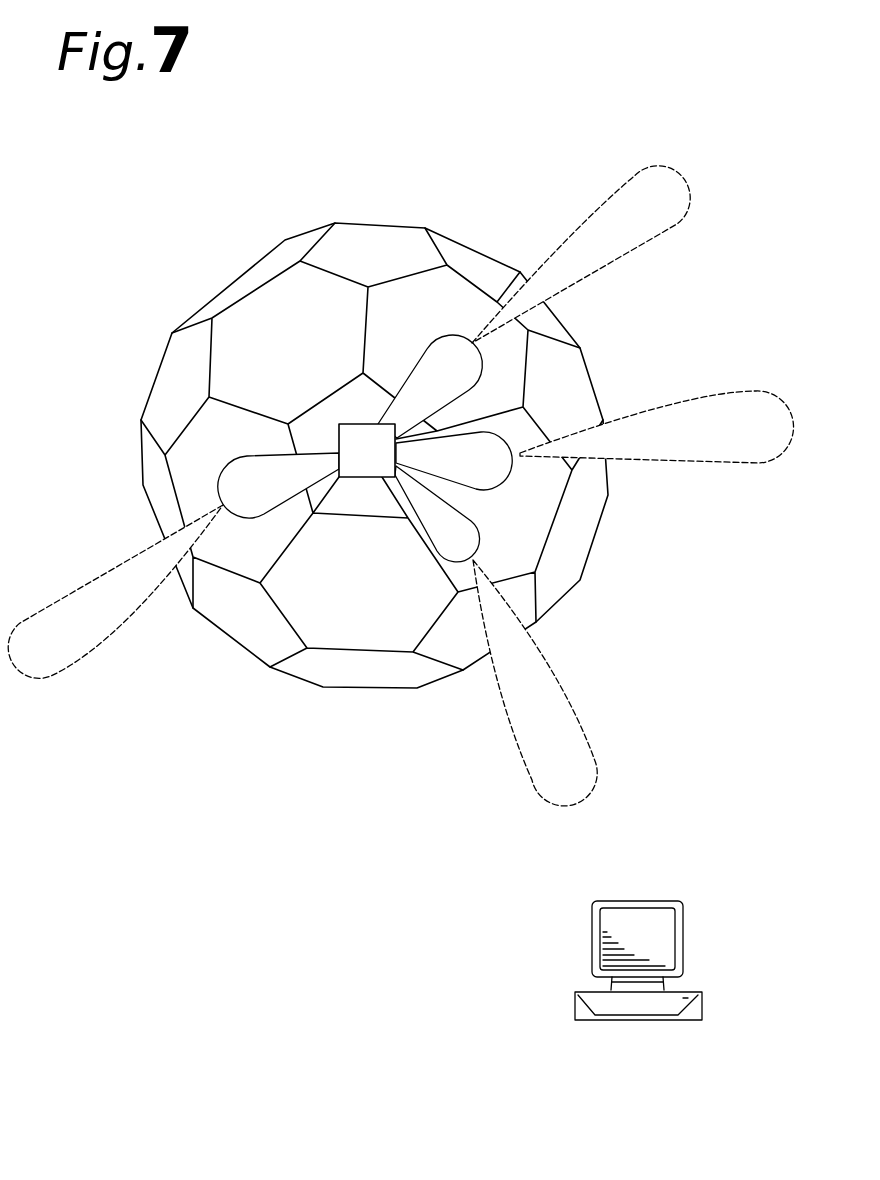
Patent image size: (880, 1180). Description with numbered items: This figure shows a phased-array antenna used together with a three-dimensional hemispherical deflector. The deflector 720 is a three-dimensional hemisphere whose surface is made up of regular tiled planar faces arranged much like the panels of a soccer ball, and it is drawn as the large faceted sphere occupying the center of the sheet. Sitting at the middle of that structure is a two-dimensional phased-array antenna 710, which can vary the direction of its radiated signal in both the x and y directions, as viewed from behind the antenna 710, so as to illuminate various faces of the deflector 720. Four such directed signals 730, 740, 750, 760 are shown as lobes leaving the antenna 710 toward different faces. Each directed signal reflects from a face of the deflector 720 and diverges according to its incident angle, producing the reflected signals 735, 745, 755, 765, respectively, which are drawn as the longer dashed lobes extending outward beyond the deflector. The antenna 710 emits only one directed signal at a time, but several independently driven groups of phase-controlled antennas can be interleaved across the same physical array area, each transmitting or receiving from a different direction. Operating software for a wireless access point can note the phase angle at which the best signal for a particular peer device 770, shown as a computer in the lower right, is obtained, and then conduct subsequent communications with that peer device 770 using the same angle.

The two-dimensional phased-array antenna 710 is at (367, 450).
The deflector 720 is at (197, 287).
The directed signal 730 is at (278, 485).
The reflected signal 735 is at (115, 591).
The directed signal 740 is at (430, 386).
The reflected signal 745 is at (581, 254).
The directed signal 750 is at (454, 461).
The reflected signal 755 is at (657, 427).
The directed signal 760 is at (437, 514).
The reflected signal 765 is at (535, 683).
The peer device 770 is at (694, 990).